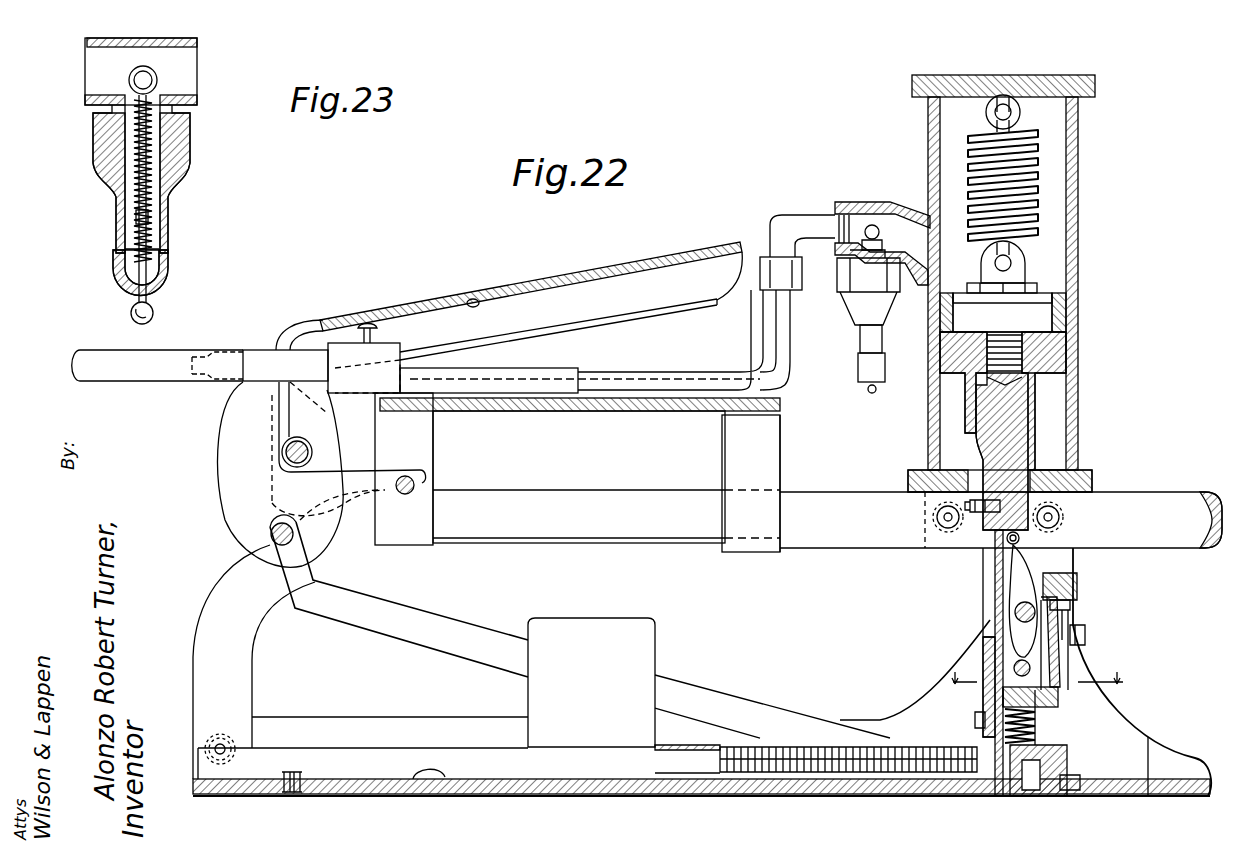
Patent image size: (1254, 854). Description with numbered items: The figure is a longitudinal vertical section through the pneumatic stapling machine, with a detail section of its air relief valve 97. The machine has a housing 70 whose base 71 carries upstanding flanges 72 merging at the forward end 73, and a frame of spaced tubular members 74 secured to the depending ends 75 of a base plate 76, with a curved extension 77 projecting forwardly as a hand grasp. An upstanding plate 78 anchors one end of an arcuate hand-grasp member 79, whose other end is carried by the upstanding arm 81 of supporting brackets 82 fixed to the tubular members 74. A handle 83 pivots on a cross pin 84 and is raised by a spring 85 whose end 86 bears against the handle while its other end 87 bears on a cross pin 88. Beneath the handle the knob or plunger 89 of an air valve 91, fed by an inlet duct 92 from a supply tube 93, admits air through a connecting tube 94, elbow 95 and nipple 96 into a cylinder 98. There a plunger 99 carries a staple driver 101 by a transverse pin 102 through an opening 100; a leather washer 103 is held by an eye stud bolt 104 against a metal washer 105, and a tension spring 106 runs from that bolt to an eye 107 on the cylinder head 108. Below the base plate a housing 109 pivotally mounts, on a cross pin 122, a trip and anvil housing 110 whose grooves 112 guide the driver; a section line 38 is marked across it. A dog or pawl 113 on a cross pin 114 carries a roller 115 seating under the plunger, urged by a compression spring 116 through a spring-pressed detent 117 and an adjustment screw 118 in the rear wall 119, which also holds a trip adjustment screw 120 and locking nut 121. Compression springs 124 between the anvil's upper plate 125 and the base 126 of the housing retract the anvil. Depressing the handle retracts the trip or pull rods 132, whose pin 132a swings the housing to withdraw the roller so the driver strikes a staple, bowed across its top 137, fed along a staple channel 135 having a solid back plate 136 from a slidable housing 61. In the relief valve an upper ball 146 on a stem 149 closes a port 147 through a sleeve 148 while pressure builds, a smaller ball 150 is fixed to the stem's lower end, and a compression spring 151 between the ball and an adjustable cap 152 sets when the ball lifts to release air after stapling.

In FIG. 22, the section line 38 is at (1035, 680).
In FIG. 22, the slidable housing 61 is at (624, 684).
In FIG. 22, the housing 70 is at (380, 804).
In FIG. 22, the base 71 is at (327, 778).
In FIG. 22, the upstanding flanges 72 is at (436, 725).
In FIG. 22, the forward end 73 is at (1172, 762).
In FIG. 22, the tubular members 74 is at (588, 494).
In FIG. 22, the depending ends 75 is at (930, 538).
In FIG. 22, the base plate 76 is at (1080, 498).
In FIG. 22, the curved extension 77 is at (1170, 500).
In FIG. 22, the upstanding plate 78 is at (432, 428).
In FIG. 22, the arcuate member 79 is at (552, 406).
In FIG. 22, the upstanding arm 81 is at (772, 432).
In FIG. 22, the supporting brackets 82 is at (765, 550).
In FIG. 22, the handle 83 is at (584, 266).
In FIG. 22, the cross pin 84 is at (282, 452).
In FIG. 22, the spring 85 is at (320, 450).
In FIG. 22, the spring end 86 is at (450, 312).
In FIG. 22, the other spring end 87 is at (410, 476).
In FIG. 22, the cross pin 88 is at (418, 486).
In FIG. 22, the knob or plunger 89 is at (367, 325).
In FIG. 22, the air valve 91 is at (404, 339).
In FIG. 22, the inlet duct 92 is at (263, 350).
In FIG. 22, the supply tube 93 is at (160, 366).
In FIG. 22, the connecting tube 94 is at (684, 372).
In FIG. 22, the elbow 95 is at (787, 212).
In FIG. 23, the nipple 96 is at (197, 92).
In FIG. 22, the nipple 96 is at (873, 200).
In FIG. 23, the air relief valve 97 is at (197, 171).
In FIG. 22, the air relief valve 97 is at (837, 308).
In FIG. 22, the cylinder 98 is at (1086, 199).
In FIG. 22, the plunger 99 is at (1050, 352).
In FIG. 22, the opening 100 is at (1002, 505).
In FIG. 22, the staple driver 101 is at (992, 574).
In FIG. 22, the transverse pin 102 is at (980, 538).
In FIG. 22, the leather washer 103 is at (1060, 316).
In FIG. 22, the eye stud bolt 104 is at (1046, 283).
In FIG. 22, the metal washer 105 is at (1050, 296).
In FIG. 22, the tension spring 106 is at (1038, 160).
In FIG. 22, the eye 107 is at (1022, 112).
In FIG. 22, the cylinder head 108 is at (1052, 78).
In FIG. 22, the housing 109 is at (990, 695).
In FIG. 22, the trip and anvil housing 110 is at (1090, 690).
In FIG. 22, the channel or groove 112 is at (992, 810).
In FIG. 22, the dog or pawl 113 is at (1049, 563).
In FIG. 22, the cross pin 114 is at (1048, 622).
In FIG. 22, the roller 115 is at (1012, 545).
In FIG. 22, the compression spring 116 is at (1078, 582).
In FIG. 22, the spring-pressed detent 117 is at (1015, 597).
In FIG. 22, the adjustment screw 118 is at (1072, 600).
In FIG. 22, the rear wall 119 is at (1078, 652).
In FIG. 22, the trip adjustment screw 120 is at (1087, 632).
In FIG. 22, the locking nut 121 is at (1070, 618).
In FIG. 22, the cross pin 122 is at (988, 618).
In FIG. 22, the compression springs 124 is at (1045, 745).
In FIG. 22, the transverse upper plate 125 is at (976, 720).
In FIG. 22, the base 126 is at (1050, 770).
In FIG. 22, the trip or pull rods 132 is at (488, 620).
In FIG. 22, the pin 132a is at (1068, 782).
In FIG. 22, the staple channel 135 is at (419, 776).
In FIG. 22, the solid back plate 136 is at (960, 776).
In FIG. 22, the staple top 137 is at (762, 755).
In FIG. 23, the upper ball 146 is at (160, 78).
In FIG. 22, the upper ball 146 is at (868, 226).
In FIG. 23, the port or passage 147 is at (150, 218).
In FIG. 23, the sleeve 148 is at (156, 245).
In FIG. 22, the sleeve 148 is at (858, 348).
In FIG. 23, the stem 149 is at (148, 288).
In FIG. 23, the smaller ball 150 is at (152, 307).
In FIG. 22, the smaller ball 150 is at (870, 393).
In FIG. 23, the compression spring 151 is at (138, 231).
In FIG. 23, the cap 152 is at (114, 272).
In FIG. 22, the cap 152 is at (857, 373).